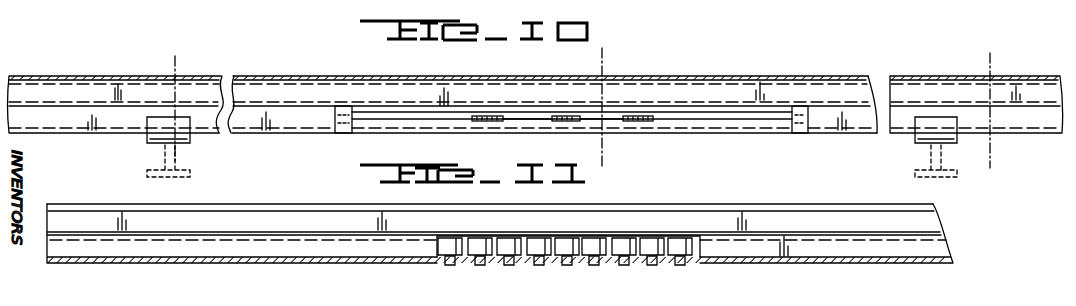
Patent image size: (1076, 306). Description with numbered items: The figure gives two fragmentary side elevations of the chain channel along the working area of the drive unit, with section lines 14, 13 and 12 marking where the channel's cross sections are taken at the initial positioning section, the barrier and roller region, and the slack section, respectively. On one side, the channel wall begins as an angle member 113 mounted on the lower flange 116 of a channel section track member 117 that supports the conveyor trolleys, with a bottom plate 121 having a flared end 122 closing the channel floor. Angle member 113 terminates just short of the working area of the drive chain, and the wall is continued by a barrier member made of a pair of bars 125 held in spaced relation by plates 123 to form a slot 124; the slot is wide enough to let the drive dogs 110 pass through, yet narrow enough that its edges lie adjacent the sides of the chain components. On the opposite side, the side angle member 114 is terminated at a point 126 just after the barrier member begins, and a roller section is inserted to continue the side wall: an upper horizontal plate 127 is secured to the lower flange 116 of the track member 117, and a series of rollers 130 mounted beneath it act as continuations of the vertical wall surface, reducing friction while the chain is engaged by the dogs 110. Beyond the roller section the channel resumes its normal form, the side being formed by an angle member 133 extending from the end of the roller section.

In FIG. 10, the section line 12- 12 is at (994, 155).
In FIG. 10, the section line 13- 13 is at (606, 153).
In FIG. 10, the section line 14- 14 is at (179, 152).
In FIG. 10, the drive dogs 110 is at (583, 117).
In FIG. 10, the angle member 113 is at (307, 122).
In FIG. 11, the angle member 114 is at (345, 243).
In FIG. 11, the lower flange 116 is at (617, 233).
In FIG. 11, the channel section track member 117 is at (670, 221).
In FIG. 10, the bottom plate 121 is at (77, 134).
In FIG. 10, the flared end 122 is at (771, 113).
In FIG. 10, the plates 123 is at (802, 132).
In FIG. 10, the slot 124 is at (527, 120).
In FIG. 10, the bars 125 is at (452, 123).
In FIG. 11, the point 126 is at (437, 246).
In FIG. 11, the upper horizontal plate 127 is at (502, 237).
In FIG. 11, the rollers 130 is at (529, 250).
In FIG. 11, the angle member 133 is at (853, 245).